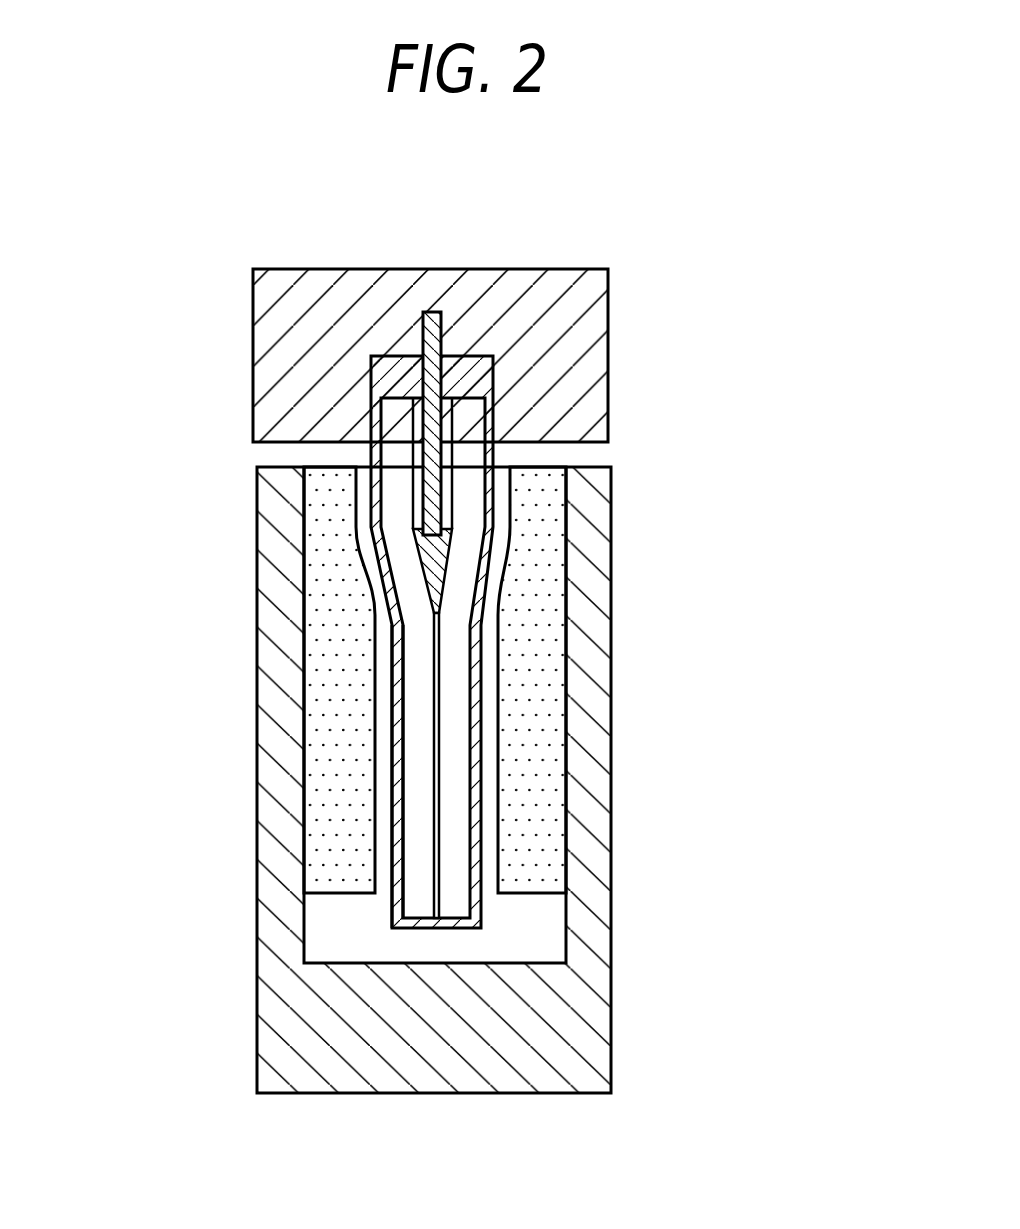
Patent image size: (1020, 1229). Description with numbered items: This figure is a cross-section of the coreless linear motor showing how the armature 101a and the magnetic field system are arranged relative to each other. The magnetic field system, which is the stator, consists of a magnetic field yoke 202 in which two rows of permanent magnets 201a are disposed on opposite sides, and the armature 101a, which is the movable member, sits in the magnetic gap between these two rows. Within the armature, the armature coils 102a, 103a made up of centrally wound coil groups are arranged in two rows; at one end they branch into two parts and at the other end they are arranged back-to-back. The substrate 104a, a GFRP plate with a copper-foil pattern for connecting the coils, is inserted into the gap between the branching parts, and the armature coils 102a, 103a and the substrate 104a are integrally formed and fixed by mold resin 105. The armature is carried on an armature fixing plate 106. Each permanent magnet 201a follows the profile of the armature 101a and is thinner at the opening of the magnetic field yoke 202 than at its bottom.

The armature 101a is at (392, 777).
The armature coil 102a is at (413, 655).
The armature coil 103a is at (455, 645).
The substrate 104a is at (432, 328).
The mold resin 105 is at (372, 492).
The armature fixing plate 106 is at (588, 372).
The permanent magnet 201a is at (550, 728).
The magnetic field yoke 202 is at (598, 810).